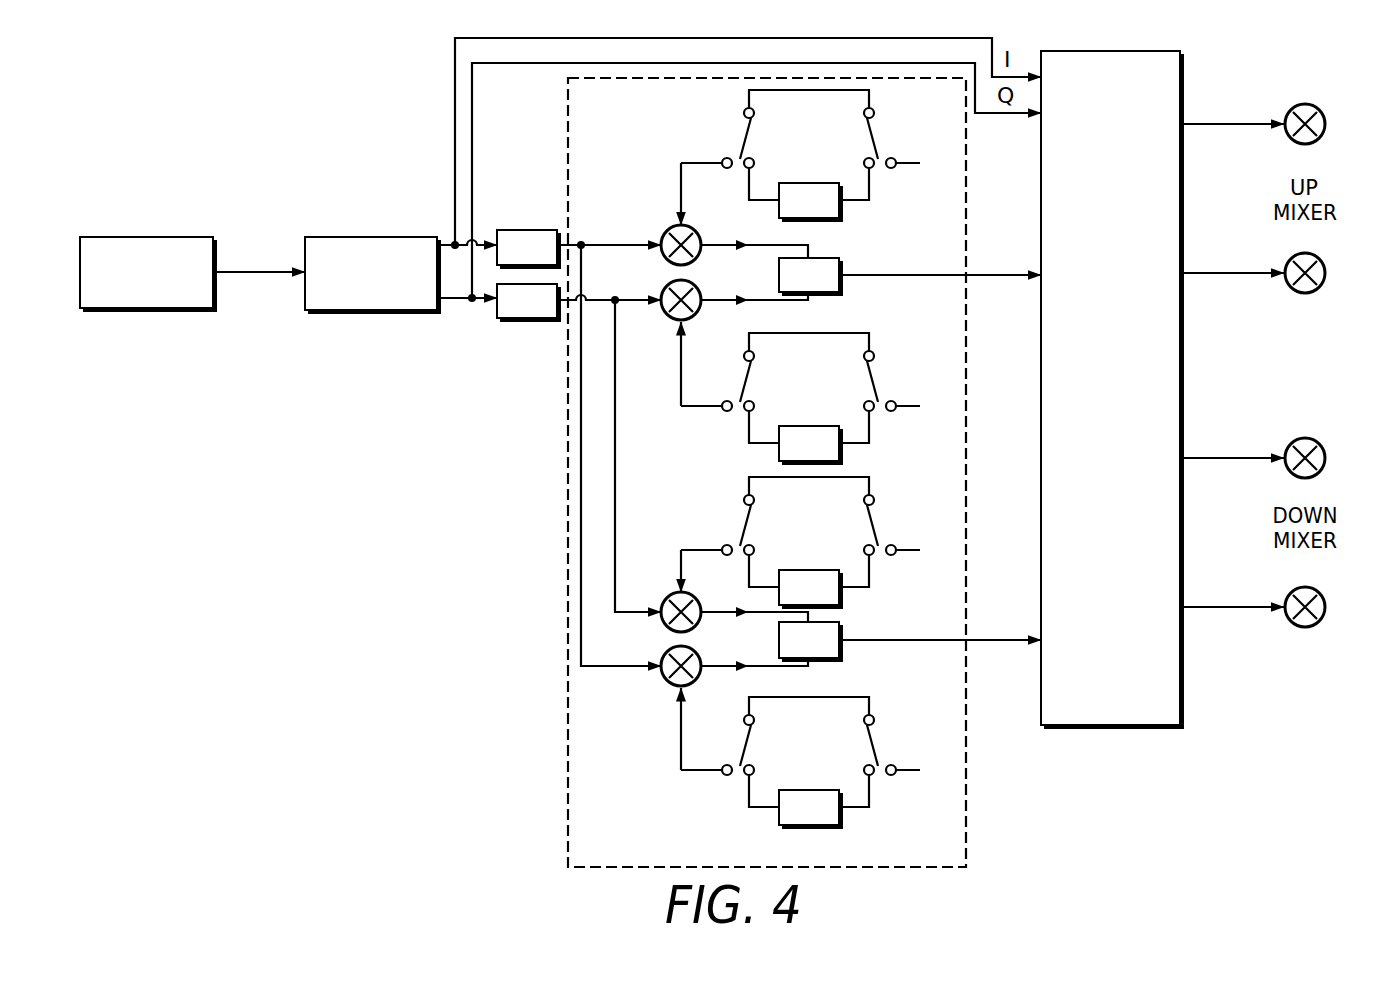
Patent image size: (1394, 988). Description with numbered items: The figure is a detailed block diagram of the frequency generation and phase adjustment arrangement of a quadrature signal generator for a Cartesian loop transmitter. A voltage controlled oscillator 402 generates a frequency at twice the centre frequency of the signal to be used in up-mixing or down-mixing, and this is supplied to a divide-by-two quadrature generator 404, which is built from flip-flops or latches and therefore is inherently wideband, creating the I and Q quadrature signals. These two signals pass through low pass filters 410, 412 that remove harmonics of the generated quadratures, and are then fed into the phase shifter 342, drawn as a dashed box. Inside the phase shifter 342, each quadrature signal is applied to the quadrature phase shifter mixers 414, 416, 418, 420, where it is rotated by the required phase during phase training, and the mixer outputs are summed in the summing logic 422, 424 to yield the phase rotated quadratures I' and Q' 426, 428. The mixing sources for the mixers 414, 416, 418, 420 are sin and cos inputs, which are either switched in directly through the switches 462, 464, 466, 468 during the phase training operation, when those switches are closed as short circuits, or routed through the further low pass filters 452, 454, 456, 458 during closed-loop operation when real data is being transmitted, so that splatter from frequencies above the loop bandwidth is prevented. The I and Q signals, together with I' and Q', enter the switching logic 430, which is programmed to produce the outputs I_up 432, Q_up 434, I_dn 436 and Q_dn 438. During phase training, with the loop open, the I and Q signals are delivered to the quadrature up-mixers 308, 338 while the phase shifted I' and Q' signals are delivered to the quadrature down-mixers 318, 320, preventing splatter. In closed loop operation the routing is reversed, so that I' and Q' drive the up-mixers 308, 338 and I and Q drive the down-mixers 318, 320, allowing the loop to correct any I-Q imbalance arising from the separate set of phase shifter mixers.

The voltage controlled oscillator 402 is at (97, 237).
The divide-by-2 quadrature generator 404 is at (318, 237).
The low pass filter 410 is at (527, 230).
The low pass filter 412 is at (527, 318).
The quadrature phase shifter mixer 414 is at (666, 231).
The quadrature phase shifter mixer 416 is at (666, 286).
The quadrature phase shifter mixer 418 is at (667, 598).
The quadrature phase shifter mixer 420 is at (667, 682).
The summing logic 422 is at (779, 275).
The summing logic 424 is at (779, 641).
The phase shifted quadrature signal I' 426 is at (940, 272).
The phase shifted quadrature signal Q' 428 is at (940, 637).
The switching logic 430 is at (1113, 727).
The output I_up 432 is at (1210, 122).
The output Q_up 434 is at (1210, 271).
The output I_dn 436 is at (1210, 456).
The output Q_dn 438 is at (1210, 605).
The phase shifter 342 is at (568, 537).
The low pass filter 452 is at (841, 203).
The low pass filter 454 is at (779, 452).
The low pass filter 456 is at (841, 599).
The low pass filter 458 is at (779, 820).
The switches 462 is at (745, 141).
The switches 464 is at (742, 386).
The switches 466 is at (745, 528).
The switches 468 is at (742, 752).
The quadrature up-mixer 308 is at (1308, 104).
The quadrature up-mixer 338 is at (1308, 253).
The quadrature down-mixer 318 is at (1308, 438).
The quadrature down-mixer 320 is at (1308, 587).